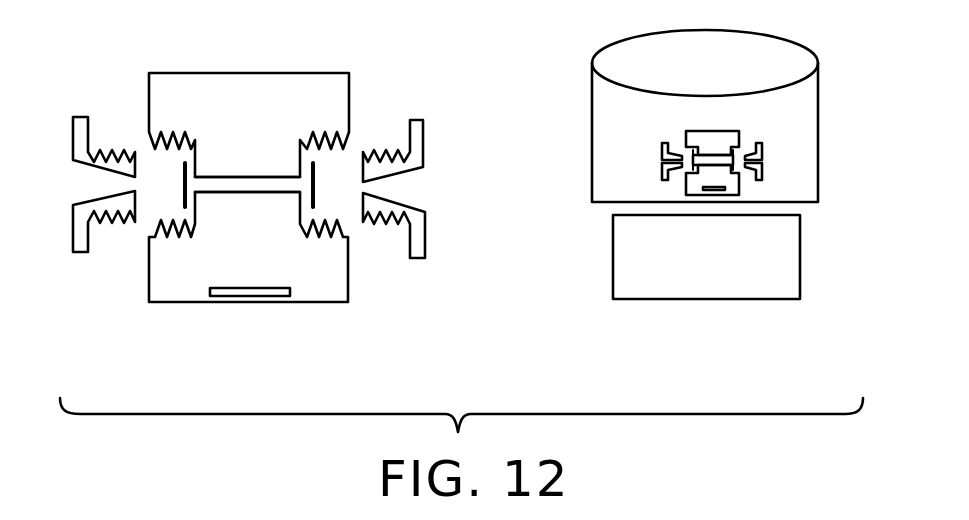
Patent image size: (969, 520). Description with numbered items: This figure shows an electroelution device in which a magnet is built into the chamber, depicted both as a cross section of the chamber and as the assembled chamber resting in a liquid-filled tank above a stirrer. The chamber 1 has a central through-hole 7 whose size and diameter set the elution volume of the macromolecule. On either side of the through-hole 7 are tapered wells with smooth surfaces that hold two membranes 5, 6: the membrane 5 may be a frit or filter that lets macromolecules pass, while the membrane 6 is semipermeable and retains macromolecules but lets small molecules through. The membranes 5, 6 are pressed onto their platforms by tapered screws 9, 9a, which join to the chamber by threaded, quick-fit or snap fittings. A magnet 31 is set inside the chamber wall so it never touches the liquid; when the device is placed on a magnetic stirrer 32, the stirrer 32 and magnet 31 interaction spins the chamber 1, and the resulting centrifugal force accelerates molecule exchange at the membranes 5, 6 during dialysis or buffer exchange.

The chamber 1 is at (273, 73).
The membrane 5 is at (183, 203).
The membrane 6 is at (317, 201).
The through-hole 7 is at (225, 196).
The tapered screw 9 is at (73, 140).
The tapered screw 9a is at (420, 146).
The magnet 31 is at (272, 302).
The magnetic stirrer 32 is at (690, 300).